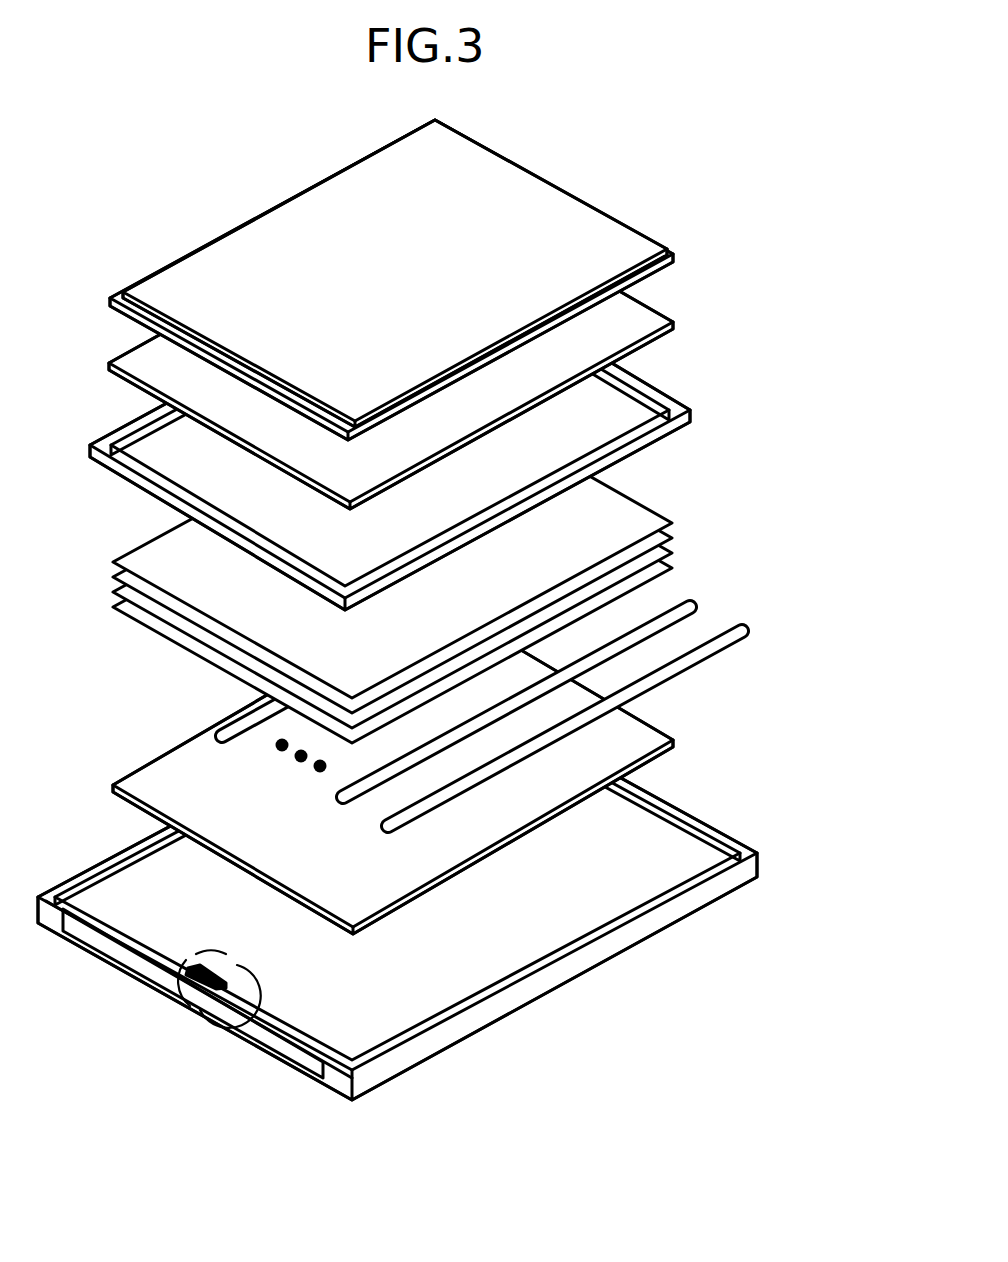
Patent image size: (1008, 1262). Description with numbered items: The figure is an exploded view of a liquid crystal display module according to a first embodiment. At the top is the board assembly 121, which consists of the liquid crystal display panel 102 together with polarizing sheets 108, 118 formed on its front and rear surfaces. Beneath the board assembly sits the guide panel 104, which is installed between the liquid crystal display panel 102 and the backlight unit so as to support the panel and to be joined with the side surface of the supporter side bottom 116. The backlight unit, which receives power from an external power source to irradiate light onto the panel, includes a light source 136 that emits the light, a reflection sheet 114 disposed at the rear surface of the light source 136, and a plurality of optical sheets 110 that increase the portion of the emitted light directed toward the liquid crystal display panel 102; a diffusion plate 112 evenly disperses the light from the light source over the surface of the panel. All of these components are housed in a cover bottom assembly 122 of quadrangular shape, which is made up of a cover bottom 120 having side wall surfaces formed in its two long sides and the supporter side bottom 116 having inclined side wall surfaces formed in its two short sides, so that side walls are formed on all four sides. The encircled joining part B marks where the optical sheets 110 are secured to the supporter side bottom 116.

The liquid crystal display panel 102 is at (672, 258).
The guide panel 104 is at (673, 426).
The polarizing sheet 108 is at (665, 322).
The optical sheets 110 is at (677, 522).
The diffusion plate 112 is at (663, 576).
The reflection sheet 114 is at (673, 743).
The supporter side bottom 116 is at (713, 828).
The polarizing sheet 118 is at (632, 238).
The cover bottom 120 is at (703, 888).
The board assembly 121 is at (486, 314).
The cover bottom assembly 122 is at (470, 890).
The light source 136 is at (745, 633).
The joining part B is at (177, 998).